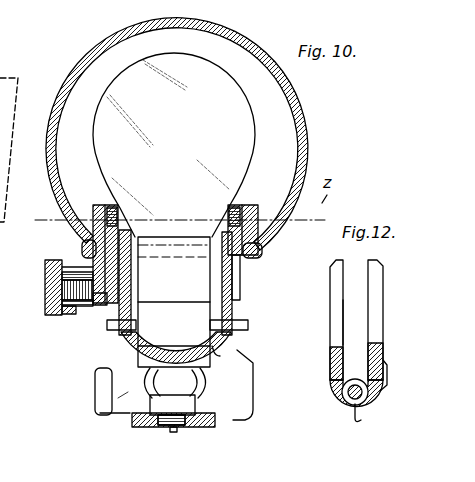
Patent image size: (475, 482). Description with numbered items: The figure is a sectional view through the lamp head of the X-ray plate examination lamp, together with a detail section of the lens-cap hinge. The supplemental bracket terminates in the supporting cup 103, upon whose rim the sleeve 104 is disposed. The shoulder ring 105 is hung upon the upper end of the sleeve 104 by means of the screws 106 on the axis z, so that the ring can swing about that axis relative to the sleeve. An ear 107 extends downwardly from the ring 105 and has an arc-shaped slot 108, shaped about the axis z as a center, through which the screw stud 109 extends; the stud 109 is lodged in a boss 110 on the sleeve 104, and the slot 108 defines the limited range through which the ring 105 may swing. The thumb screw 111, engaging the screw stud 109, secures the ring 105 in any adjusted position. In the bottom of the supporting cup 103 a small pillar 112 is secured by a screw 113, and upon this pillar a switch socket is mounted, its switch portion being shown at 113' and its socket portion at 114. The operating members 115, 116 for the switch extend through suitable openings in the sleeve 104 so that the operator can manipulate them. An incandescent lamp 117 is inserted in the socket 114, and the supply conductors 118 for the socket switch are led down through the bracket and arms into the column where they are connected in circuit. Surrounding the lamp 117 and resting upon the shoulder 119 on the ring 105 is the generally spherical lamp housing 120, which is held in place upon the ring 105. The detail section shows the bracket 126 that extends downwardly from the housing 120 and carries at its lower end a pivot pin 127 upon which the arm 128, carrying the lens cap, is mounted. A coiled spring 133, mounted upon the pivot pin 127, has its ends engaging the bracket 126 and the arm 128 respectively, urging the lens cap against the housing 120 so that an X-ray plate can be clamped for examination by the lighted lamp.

In FIG. 10, the supporting cup 103 is at (210, 424).
In FIG. 10, the sleeve 104 is at (228, 285).
In FIG. 10, the shoulder ring 105 is at (257, 262).
In FIG. 10, the screws 106 is at (258, 212).
In FIG. 10, the ear 107 is at (92, 305).
In FIG. 10, the arc-shaped slot 108 is at (123, 275).
In FIG. 10, the screw stud 109 is at (50, 304).
In FIG. 10, the boss 110 is at (108, 304).
In FIG. 10, the thumb screw 111 is at (46, 276).
In FIG. 10, the pillar 112 is at (141, 419).
In FIG. 10, the screw 113 is at (173, 444).
In FIG. 10, the switch portion 113' is at (254, 359).
In FIG. 10, the socket portion 114 is at (233, 307).
In FIG. 10, the operating member 115 is at (113, 308).
In FIG. 10, the operating member 116 is at (243, 327).
In FIG. 10, the incandescent lamp 117 is at (232, 110).
In FIG. 10, the supply conductors 118 is at (217, 390).
In FIG. 10, the shoulder 119 is at (262, 250).
In FIG. 10, the lamp housing 120 is at (240, 43).
In FIG. 12, the bracket 126 is at (378, 300).
In FIG. 10, the pivot pin 127 is at (118, 398).
In FIG. 12, the pivot pin 127 is at (343, 410).
In FIG. 12, the arm 128 is at (336, 294).
In FIG. 12, the coiled spring 133 is at (366, 410).